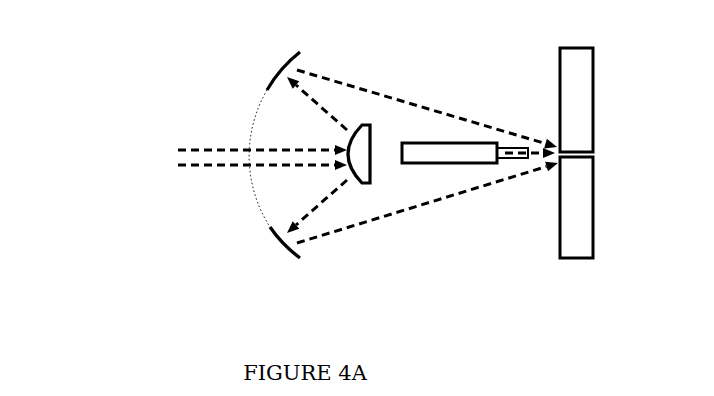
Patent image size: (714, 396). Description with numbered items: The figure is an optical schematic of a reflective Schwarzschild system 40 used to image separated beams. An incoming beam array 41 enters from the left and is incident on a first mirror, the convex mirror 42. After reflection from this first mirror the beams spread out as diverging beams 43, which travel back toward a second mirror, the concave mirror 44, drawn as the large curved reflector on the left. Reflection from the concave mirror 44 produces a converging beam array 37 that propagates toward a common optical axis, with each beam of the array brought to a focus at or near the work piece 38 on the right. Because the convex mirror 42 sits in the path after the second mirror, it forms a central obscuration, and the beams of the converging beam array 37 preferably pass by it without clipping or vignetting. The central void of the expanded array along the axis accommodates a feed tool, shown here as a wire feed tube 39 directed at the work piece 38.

The converging beam array 37 is at (430, 97).
The work piece 38 is at (573, 243).
The wire feed tube 39 is at (450, 152).
The Schwarzschild system 40 is at (111, 101).
The beam array 41 is at (197, 183).
The convex mirror 42 is at (363, 126).
The diverging beams 43 is at (289, 104).
The concave mirror 44 is at (274, 257).